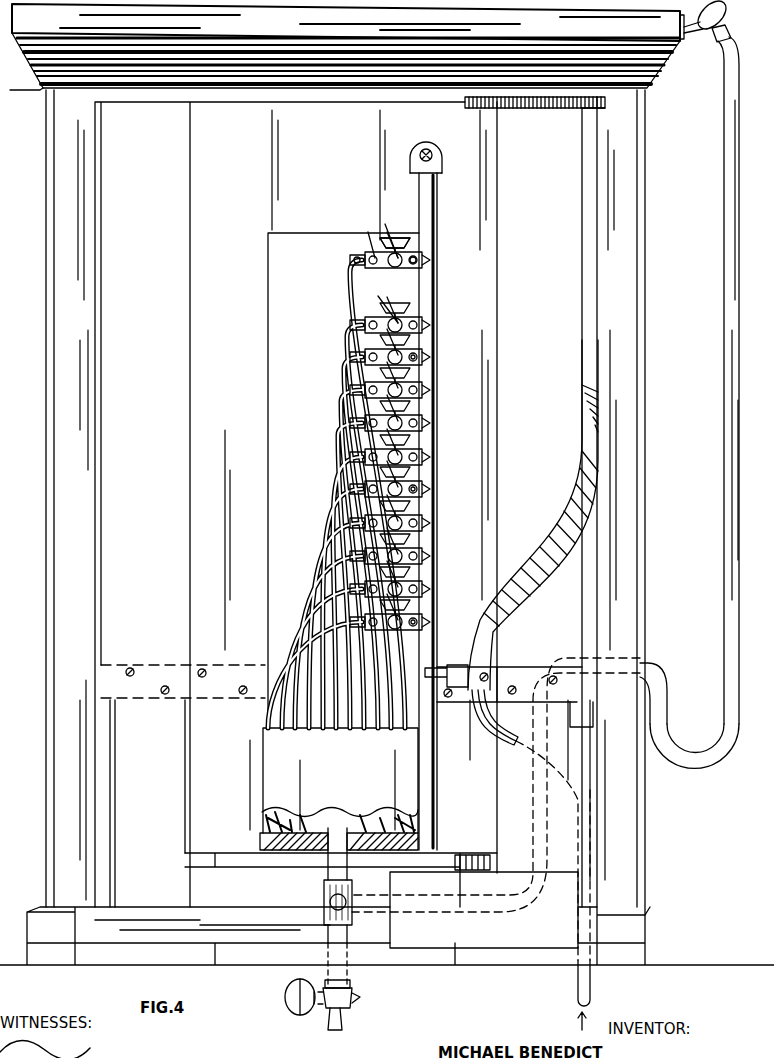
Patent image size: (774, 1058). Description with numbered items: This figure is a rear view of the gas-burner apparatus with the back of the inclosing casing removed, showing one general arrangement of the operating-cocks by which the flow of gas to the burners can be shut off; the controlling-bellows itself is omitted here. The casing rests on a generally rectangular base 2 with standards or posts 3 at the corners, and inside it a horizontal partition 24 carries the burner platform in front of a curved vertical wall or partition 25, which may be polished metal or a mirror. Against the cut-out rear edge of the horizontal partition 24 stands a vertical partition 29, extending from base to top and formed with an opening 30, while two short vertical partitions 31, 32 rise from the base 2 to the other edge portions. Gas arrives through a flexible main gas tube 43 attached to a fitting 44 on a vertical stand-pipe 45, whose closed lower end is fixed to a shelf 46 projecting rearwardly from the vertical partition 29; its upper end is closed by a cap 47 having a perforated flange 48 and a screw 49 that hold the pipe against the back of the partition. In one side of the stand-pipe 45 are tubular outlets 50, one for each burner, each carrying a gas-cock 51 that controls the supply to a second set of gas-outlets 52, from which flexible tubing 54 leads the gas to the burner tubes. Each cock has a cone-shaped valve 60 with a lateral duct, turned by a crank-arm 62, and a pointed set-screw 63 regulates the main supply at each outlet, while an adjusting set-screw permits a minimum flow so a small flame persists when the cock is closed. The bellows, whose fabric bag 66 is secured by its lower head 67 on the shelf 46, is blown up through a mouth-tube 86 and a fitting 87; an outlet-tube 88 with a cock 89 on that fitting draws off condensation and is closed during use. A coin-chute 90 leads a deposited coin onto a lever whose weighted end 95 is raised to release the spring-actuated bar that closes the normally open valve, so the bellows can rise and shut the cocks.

The base 2 is at (672, 955).
The standards or posts 3 is at (656, 785).
The horizontal partition 24 is at (103, 667).
The curved vertical wall or partition 25 is at (606, 275).
The vertical partition 29 is at (353, 487).
The opening 30 is at (343, 480).
The short vertical partition 31 is at (514, 785).
The short vertical partition 32 is at (150, 803).
The main gas tube or pipe 43 is at (490, 725).
The fitting 44 is at (440, 665).
The vertical stand-pipe 45 is at (437, 215).
The shelf 46 is at (250, 866).
The cap 47 is at (442, 176).
The perforated flange 48 is at (443, 160).
The screw 49 is at (431, 150).
The tubular outlets 50 is at (430, 263).
The gas-cock 51 is at (430, 622).
The gas-outlets 52 is at (358, 257).
The flexible tubing 54 is at (335, 362).
The cone-shaped valve 60 is at (420, 250).
The crank-arm 62 is at (383, 262).
The pointed set-screw 63 is at (370, 240).
The bag 66 is at (305, 812).
The lower head 67 is at (258, 836).
The mouth-tube 86 is at (725, 550).
The fitting 87 is at (325, 893).
The outlet-tube 88 is at (328, 930).
The cock 89 is at (322, 1016).
The coin-chute 90 is at (560, 496).
The weighted end 95 is at (484, 910).